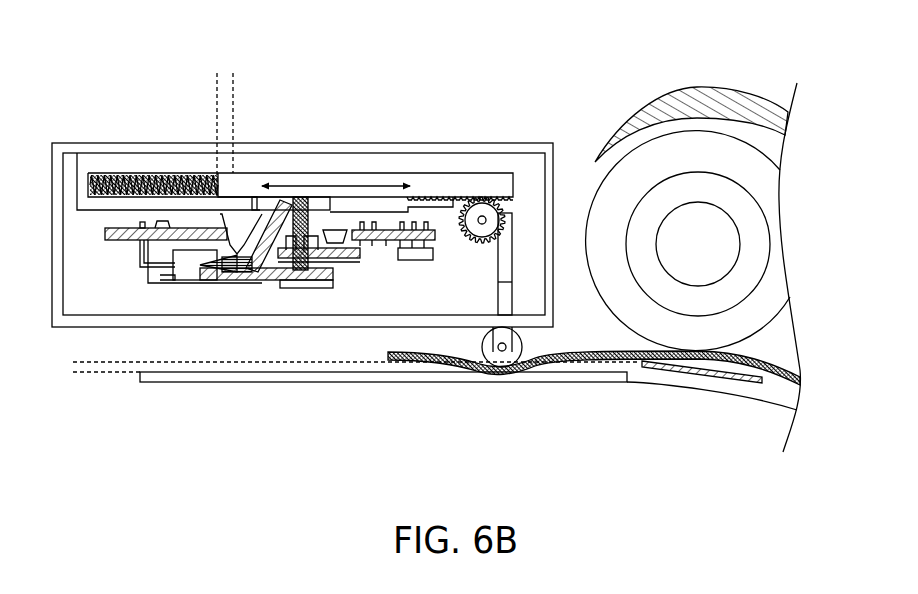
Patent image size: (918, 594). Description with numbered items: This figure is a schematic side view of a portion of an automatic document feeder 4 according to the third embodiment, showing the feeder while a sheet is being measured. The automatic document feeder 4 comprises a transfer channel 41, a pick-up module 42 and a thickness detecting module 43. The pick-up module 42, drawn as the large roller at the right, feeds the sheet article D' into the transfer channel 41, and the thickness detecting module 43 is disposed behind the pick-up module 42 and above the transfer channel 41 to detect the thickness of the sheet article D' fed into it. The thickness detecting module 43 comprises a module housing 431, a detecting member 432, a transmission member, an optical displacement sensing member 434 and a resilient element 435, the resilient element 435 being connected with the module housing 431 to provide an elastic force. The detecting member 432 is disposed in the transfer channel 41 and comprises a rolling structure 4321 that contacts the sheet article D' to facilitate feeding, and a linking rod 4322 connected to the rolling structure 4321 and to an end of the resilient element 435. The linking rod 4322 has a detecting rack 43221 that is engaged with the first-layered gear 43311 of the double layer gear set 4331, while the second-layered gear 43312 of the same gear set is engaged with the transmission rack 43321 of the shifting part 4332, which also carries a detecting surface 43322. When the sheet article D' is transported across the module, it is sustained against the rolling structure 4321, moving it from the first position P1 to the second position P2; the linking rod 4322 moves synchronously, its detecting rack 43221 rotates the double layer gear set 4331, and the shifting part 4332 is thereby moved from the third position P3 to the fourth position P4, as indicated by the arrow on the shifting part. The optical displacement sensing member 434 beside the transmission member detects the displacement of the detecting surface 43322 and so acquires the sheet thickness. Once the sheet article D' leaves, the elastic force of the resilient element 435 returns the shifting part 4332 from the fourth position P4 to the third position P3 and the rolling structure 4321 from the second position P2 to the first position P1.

The automatic document feeder 4 is at (567, 77).
The transfer channel 41 is at (627, 372).
The pick-up module 42 is at (718, 153).
The thickness detecting module 43 is at (350, 75).
The module housing 431 is at (81, 147).
The detecting member 432 is at (485, 378).
The rolling structure 4321 is at (495, 352).
The linking rod 4322 is at (523, 350).
The detecting rack 43221 is at (498, 282).
The double layer gear set 4331 is at (514, 208).
The first-layered gear 43311 is at (480, 198).
The second-layered gear 43312 is at (500, 203).
The shifting part 4332 is at (346, 180).
The transmission rack 43321 is at (455, 195).
The detecting surface 43322 is at (316, 195).
The optical displacement sensing member 434 is at (240, 293).
The resilient element 435 is at (130, 173).
The first position P1 is at (94, 376).
The second position P2 is at (344, 362).
The third position P3 is at (239, 113).
The fourth position P4 is at (211, 125).
The sheet article D' is at (608, 397).